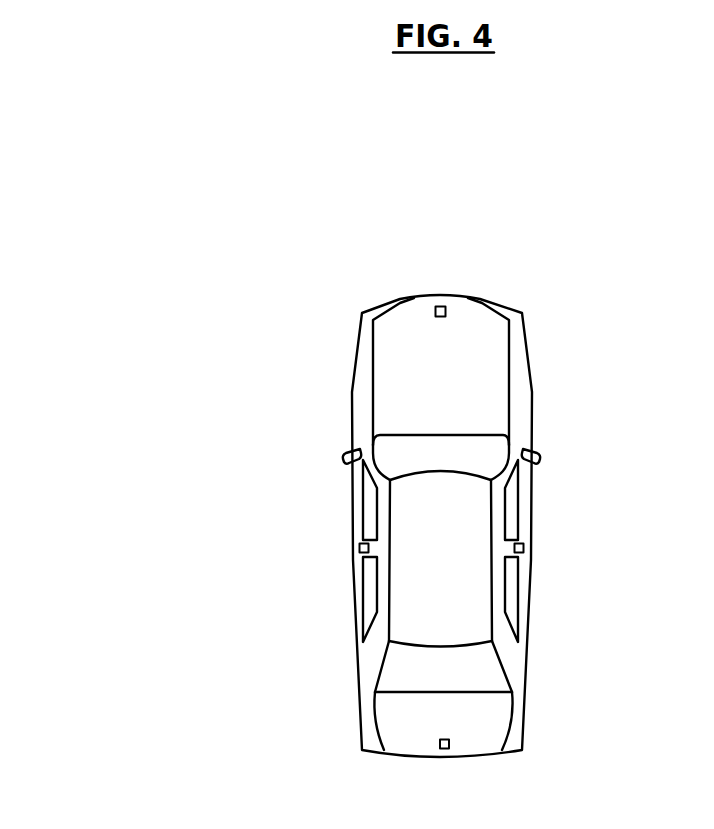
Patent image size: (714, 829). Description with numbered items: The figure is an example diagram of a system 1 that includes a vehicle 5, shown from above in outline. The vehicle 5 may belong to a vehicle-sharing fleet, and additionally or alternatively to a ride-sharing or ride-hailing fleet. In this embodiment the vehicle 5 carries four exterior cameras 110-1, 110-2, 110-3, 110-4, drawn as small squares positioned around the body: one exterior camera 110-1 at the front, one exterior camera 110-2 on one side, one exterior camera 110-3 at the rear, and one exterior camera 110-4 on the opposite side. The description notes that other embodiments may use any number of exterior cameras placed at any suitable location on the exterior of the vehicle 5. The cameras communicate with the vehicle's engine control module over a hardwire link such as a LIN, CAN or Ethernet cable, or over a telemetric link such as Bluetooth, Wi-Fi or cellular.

The system 1 is at (125, 280).
The vehicle 5 is at (358, 342).
The exterior camera 110-1 is at (440, 306).
The exterior camera 110-2 is at (523, 548).
The exterior camera 110-3 is at (444, 749).
The exterior camera 110-4 is at (360, 548).